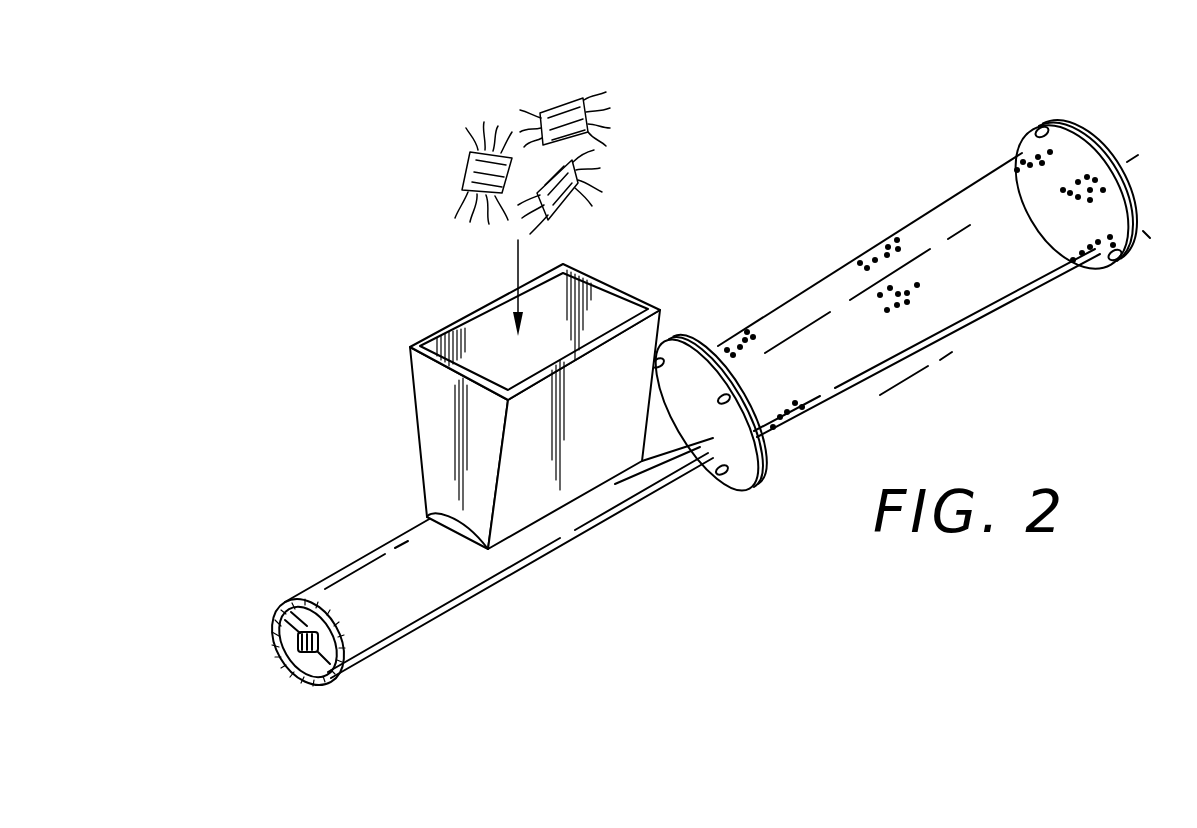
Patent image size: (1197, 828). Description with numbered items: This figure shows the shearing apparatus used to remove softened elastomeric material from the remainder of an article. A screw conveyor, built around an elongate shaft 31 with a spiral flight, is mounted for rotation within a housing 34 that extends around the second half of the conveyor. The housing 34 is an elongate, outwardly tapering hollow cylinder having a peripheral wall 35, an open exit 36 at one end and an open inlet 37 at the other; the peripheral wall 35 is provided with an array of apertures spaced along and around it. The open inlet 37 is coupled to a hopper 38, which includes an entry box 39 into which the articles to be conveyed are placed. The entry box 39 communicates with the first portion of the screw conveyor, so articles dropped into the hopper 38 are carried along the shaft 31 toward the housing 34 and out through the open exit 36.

The elongate shaft 31 is at (275, 650).
The housing 34 is at (946, 194).
The peripheral wall 35 is at (1022, 243).
The open exit 36 is at (1113, 157).
The open inlet 37 is at (710, 350).
The hopper 38 is at (386, 461).
The entry box 39 is at (470, 325).